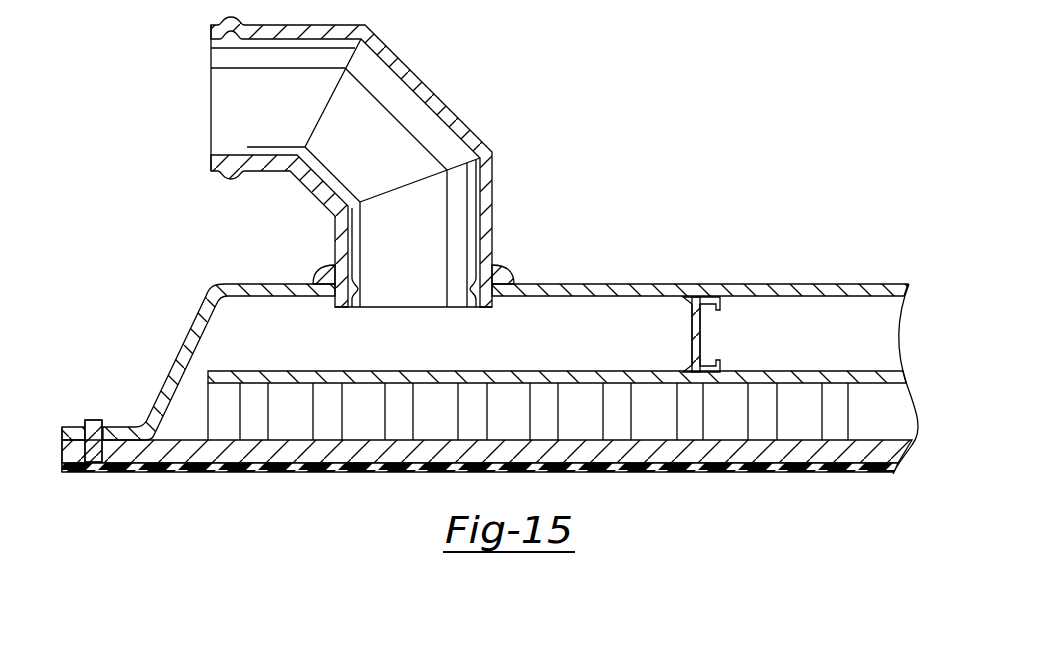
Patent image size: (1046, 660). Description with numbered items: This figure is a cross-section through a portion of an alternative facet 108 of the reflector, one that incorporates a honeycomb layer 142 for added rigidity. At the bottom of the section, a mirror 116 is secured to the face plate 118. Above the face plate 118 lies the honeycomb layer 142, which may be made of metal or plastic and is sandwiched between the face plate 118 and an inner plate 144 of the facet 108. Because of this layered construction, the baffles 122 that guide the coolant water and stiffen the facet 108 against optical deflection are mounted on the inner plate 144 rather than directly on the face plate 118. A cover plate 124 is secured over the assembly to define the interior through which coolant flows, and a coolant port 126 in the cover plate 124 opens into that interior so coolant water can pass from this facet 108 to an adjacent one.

The facet 108 is at (702, 150).
The mirror 116 is at (121, 478).
The face plate 118 is at (316, 451).
The baffles 122 is at (699, 333).
The cover plate 124 is at (545, 282).
The coolant ports 126 is at (430, 89).
The honeycomb layer 142 is at (687, 408).
The inner plate 144 is at (801, 389).